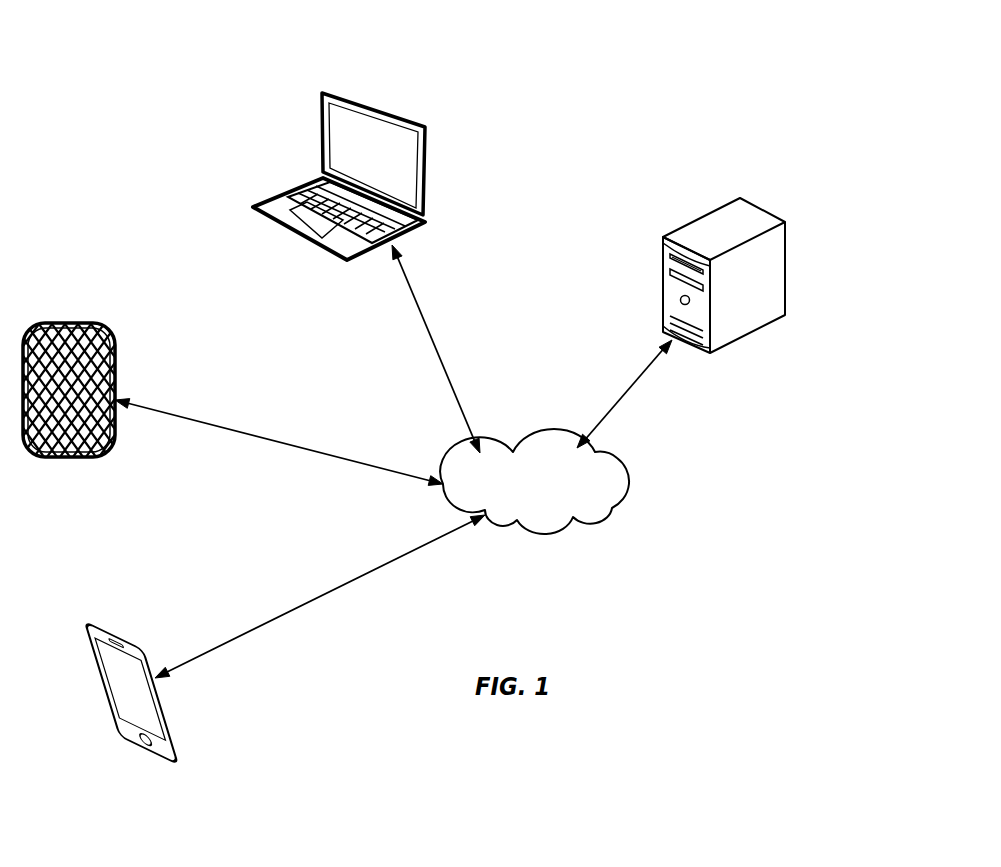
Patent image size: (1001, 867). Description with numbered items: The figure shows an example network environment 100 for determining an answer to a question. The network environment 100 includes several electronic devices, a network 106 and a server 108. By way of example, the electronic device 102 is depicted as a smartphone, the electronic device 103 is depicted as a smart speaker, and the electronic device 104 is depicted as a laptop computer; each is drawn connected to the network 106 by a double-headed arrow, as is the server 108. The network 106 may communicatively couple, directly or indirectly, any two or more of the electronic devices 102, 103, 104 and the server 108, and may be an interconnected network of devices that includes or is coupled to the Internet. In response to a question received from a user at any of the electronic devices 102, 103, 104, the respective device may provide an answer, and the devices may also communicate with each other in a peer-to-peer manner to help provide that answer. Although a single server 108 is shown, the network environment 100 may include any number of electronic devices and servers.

The network environment 100 is at (138, 75).
The electronic device 102 is at (123, 752).
The electronic device 103 is at (88, 458).
The electronic device 104 is at (337, 259).
The network 106 is at (575, 525).
The server 108 is at (676, 230).